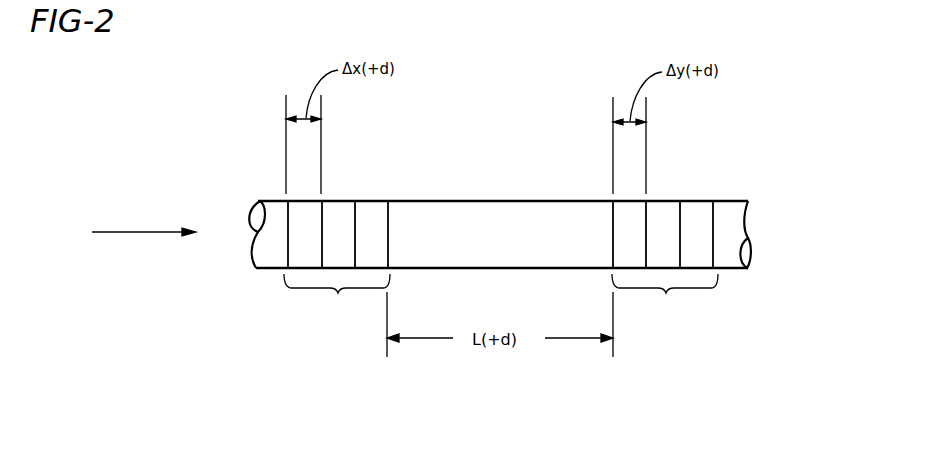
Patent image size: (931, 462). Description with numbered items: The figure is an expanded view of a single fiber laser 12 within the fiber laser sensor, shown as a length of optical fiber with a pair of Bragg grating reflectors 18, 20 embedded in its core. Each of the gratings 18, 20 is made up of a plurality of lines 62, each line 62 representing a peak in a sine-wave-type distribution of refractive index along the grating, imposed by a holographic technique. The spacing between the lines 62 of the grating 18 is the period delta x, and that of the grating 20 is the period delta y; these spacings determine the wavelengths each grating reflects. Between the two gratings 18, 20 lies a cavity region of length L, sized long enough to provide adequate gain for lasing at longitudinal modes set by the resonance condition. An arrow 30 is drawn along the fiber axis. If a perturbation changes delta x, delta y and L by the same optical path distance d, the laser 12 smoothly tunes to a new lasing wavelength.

The fiber laser 12 is at (207, 120).
The direction of movement arrow 30 is at (136, 231).
The lines 62 is at (286, 206).
The Bragg grating reflector 18 is at (337, 298).
The Bragg grating reflector 20 is at (665, 298).